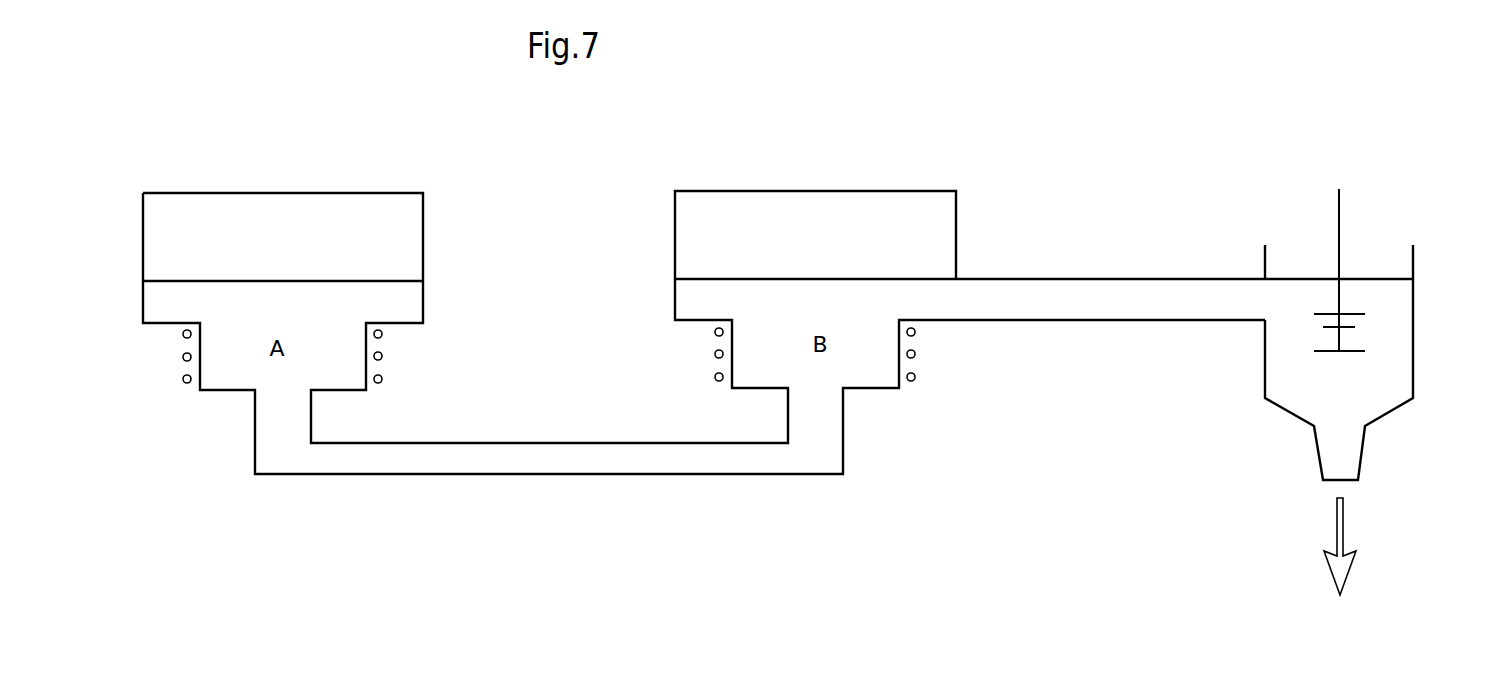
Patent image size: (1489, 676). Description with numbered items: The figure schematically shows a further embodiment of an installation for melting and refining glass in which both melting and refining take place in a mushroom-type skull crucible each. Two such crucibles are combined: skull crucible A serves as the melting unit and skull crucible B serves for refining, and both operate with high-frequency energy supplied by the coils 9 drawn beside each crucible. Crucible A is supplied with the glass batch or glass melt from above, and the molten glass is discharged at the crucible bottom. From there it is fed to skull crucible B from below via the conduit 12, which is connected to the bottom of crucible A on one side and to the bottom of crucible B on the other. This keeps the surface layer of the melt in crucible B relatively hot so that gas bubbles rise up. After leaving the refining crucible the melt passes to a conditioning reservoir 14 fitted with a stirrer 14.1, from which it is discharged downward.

The coils 9 is at (382, 356).
The conduit 12 is at (782, 472).
The conditioning reservoir 14 is at (1403, 407).
The stirrer 14.1 is at (1339, 198).